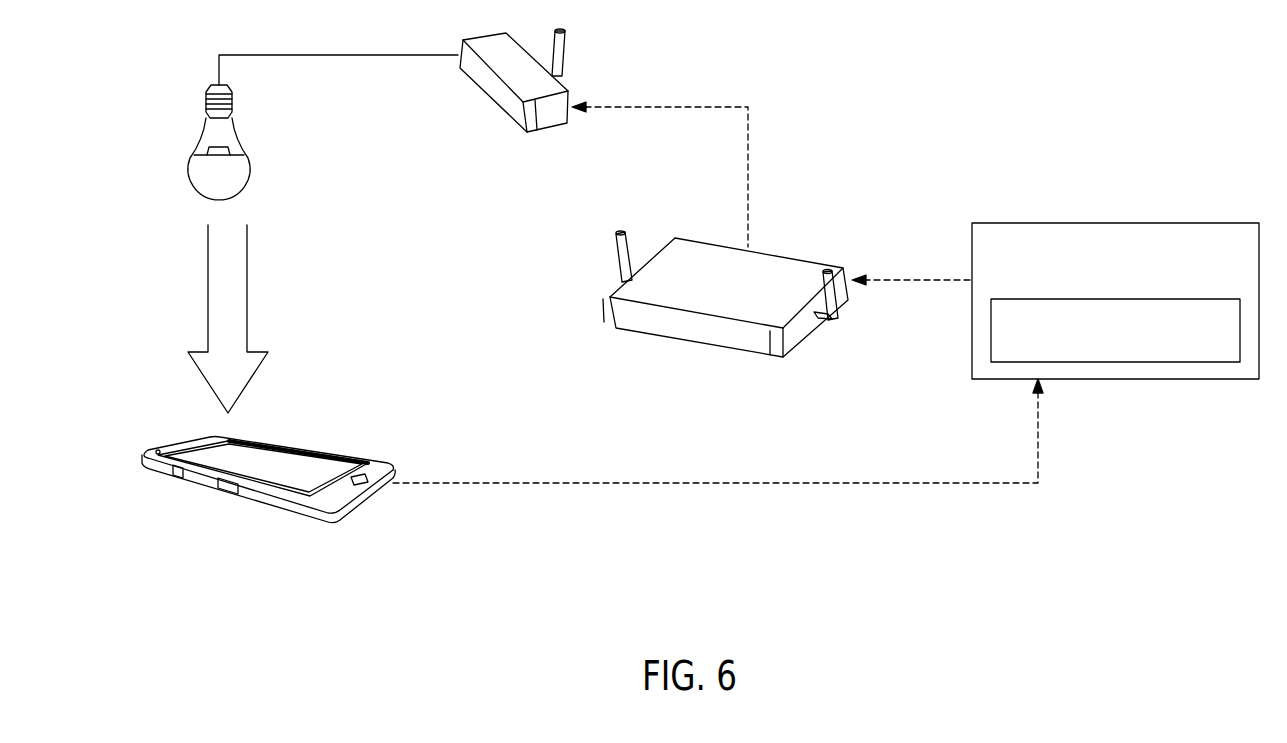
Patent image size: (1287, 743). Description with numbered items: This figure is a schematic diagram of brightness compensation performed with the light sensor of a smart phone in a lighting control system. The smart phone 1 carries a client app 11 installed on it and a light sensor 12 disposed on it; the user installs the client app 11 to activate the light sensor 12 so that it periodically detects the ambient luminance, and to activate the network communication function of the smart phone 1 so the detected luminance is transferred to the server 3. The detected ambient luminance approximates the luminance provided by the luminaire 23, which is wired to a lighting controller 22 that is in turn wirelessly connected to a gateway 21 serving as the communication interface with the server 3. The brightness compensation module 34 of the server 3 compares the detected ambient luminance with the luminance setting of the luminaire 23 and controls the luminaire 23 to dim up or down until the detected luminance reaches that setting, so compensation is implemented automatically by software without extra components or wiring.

The smart phone 1 is at (255, 474).
The client app 11 is at (273, 455).
The light sensor 12 is at (156, 451).
The gateway 21 is at (783, 252).
The lighting controller 22 is at (568, 82).
The luminaire 23 is at (199, 128).
The server 3 is at (1115, 298).
The brightness compensation module 34 is at (1170, 362).